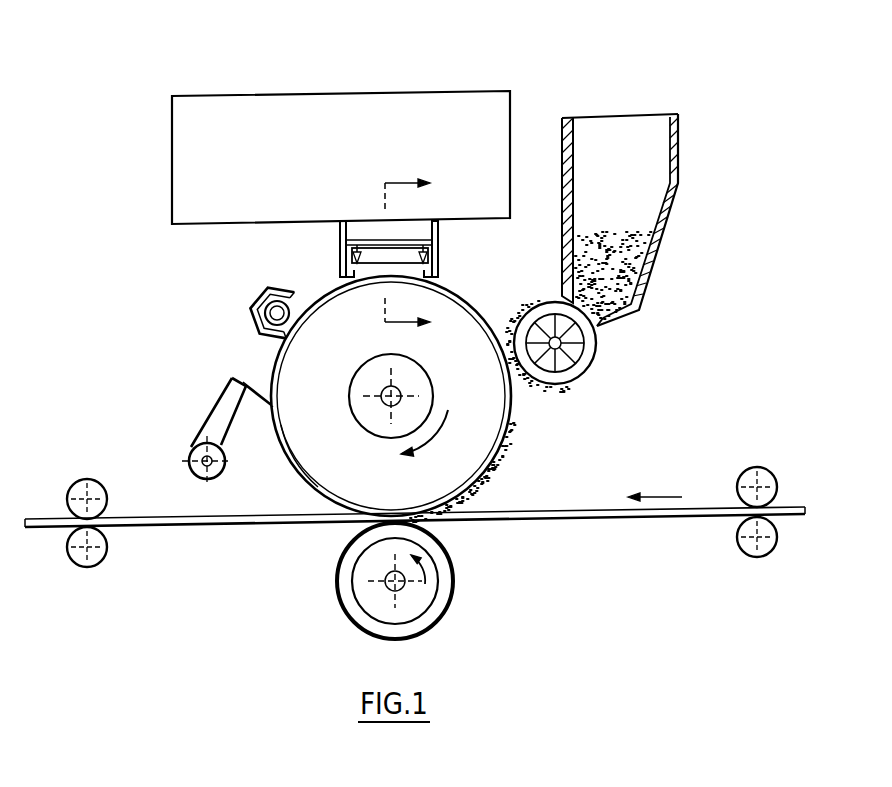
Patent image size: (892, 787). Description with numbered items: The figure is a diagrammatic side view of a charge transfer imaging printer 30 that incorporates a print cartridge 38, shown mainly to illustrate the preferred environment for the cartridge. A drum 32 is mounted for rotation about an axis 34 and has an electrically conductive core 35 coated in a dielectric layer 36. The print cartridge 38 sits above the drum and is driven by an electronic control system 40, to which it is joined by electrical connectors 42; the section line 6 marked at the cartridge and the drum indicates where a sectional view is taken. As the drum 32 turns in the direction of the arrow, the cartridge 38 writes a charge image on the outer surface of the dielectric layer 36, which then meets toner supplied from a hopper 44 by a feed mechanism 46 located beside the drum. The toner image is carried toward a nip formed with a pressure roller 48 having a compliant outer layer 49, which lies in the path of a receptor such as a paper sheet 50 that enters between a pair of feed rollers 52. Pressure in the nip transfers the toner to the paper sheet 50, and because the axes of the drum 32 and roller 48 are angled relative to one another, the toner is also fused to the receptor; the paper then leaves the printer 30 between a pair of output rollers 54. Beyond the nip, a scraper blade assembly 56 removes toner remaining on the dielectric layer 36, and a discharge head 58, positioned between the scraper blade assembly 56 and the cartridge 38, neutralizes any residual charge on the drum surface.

The printer 30 is at (178, 74).
The electronic control system 40 is at (443, 100).
The section line 6- 6 is at (417, 251).
The print cartridge 38 is at (343, 262).
The electrical connectors 42 is at (440, 252).
The hopper 44 is at (650, 206).
The feed mechanism 46 is at (598, 352).
The drum 32 is at (272, 366).
The axis 34 is at (389, 384).
The electrically conductive core 35 is at (318, 457).
The dielectric layer 36 is at (496, 470).
The discharge head 58 is at (260, 300).
The scraper blade assembly 56 is at (207, 420).
The paper sheet 50 is at (600, 524).
The feed rollers 52 is at (738, 532).
The output rollers 54 is at (108, 548).
The pressure roller 48 is at (340, 601).
The compliant outer layer 49 is at (442, 599).